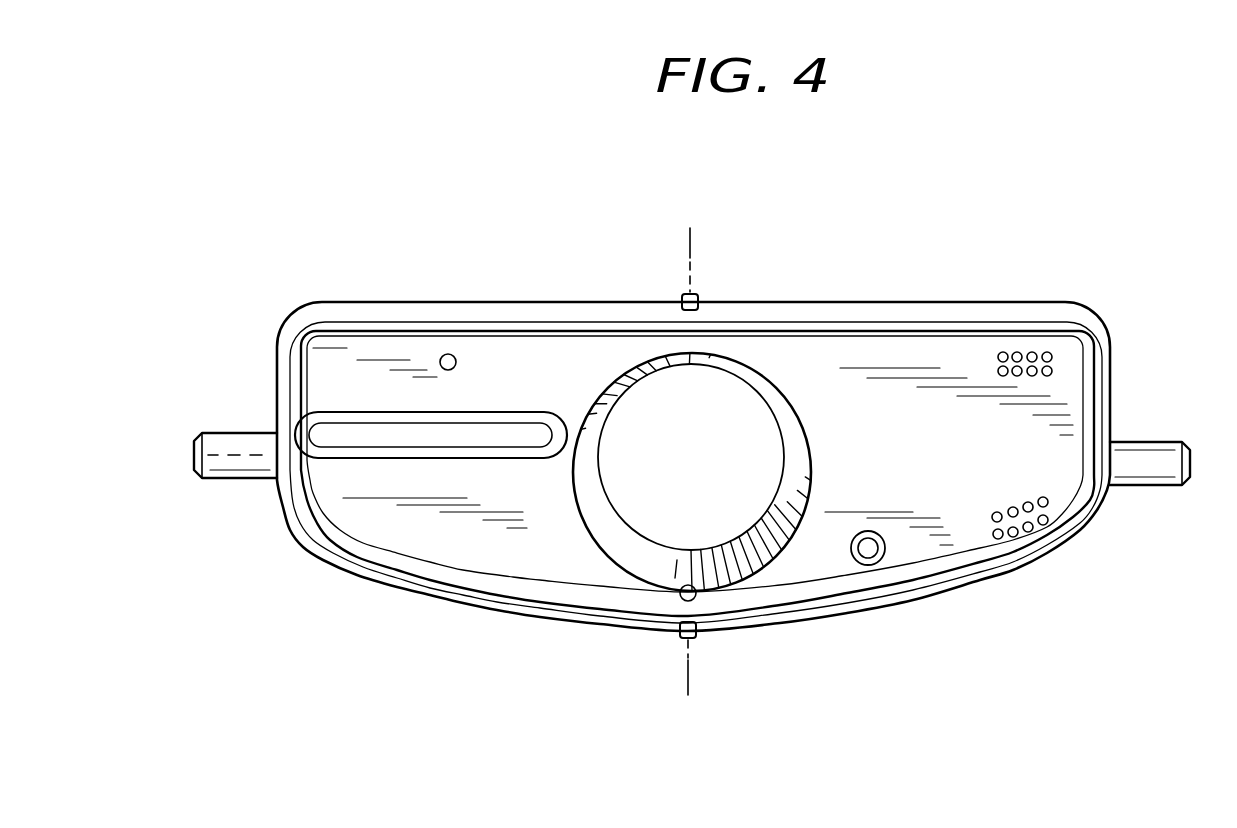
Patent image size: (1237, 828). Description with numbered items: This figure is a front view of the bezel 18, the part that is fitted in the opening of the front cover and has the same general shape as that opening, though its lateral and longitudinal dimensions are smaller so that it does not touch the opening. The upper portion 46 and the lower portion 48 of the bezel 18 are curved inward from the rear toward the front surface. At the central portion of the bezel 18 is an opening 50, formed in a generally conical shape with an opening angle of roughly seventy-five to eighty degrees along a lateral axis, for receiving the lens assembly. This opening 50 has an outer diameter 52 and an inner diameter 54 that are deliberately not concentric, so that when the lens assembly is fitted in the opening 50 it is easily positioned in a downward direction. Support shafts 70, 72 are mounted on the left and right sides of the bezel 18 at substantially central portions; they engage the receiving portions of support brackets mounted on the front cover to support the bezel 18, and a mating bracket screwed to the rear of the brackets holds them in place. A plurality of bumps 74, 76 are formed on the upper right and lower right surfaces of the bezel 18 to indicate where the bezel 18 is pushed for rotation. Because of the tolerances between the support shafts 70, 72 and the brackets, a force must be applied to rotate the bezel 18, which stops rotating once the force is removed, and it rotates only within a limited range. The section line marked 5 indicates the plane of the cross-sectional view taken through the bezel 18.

The bezel 18 is at (1008, 298).
The upper portion 46 is at (412, 322).
The lower portion 48 is at (392, 554).
The opening 50 is at (609, 566).
The outer diameter 52 is at (777, 566).
The inner diameter 54 is at (768, 377).
The support shaft 70 is at (243, 430).
The support shaft 72 is at (1143, 438).
The bumps 74 is at (1060, 358).
The bumps 76 is at (1016, 544).
The section line 5- 5 is at (687, 243).